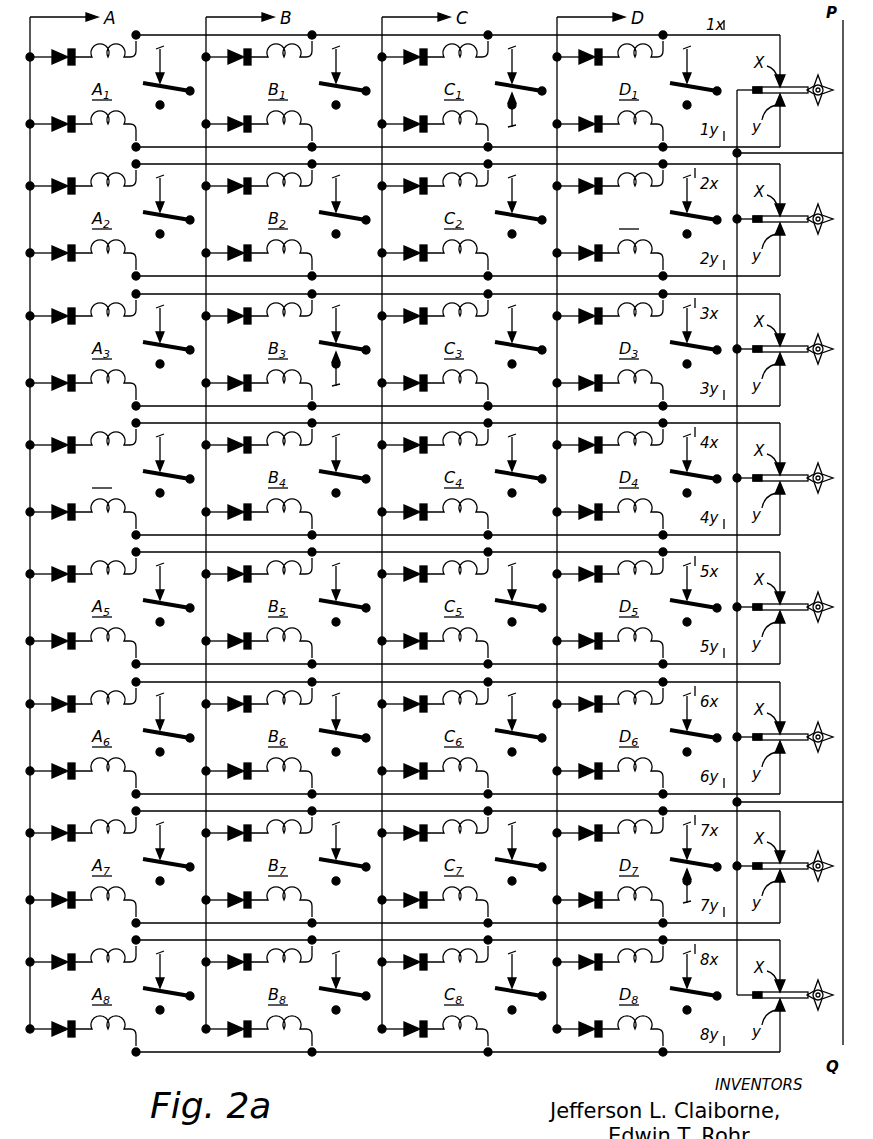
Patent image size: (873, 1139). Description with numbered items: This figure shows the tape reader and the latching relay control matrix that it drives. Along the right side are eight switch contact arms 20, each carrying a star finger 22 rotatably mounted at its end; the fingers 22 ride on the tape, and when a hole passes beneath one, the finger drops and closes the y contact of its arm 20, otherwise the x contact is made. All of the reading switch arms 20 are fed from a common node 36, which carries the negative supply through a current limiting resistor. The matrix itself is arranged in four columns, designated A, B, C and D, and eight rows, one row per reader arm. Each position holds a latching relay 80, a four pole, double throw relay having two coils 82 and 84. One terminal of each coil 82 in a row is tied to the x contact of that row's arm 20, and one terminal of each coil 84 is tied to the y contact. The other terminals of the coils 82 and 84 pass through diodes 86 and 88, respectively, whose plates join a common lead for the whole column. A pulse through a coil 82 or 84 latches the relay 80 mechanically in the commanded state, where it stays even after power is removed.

The switch contact arm 20 is at (780, 543).
The star finger 22 is at (818, 560).
The node 36 is at (737, 698).
The latching relay 80 is at (373, 349).
The coil 82 is at (369, 307).
The coil 84 is at (369, 393).
The diode 86 is at (323, 315).
The diode 88 is at (322, 398).